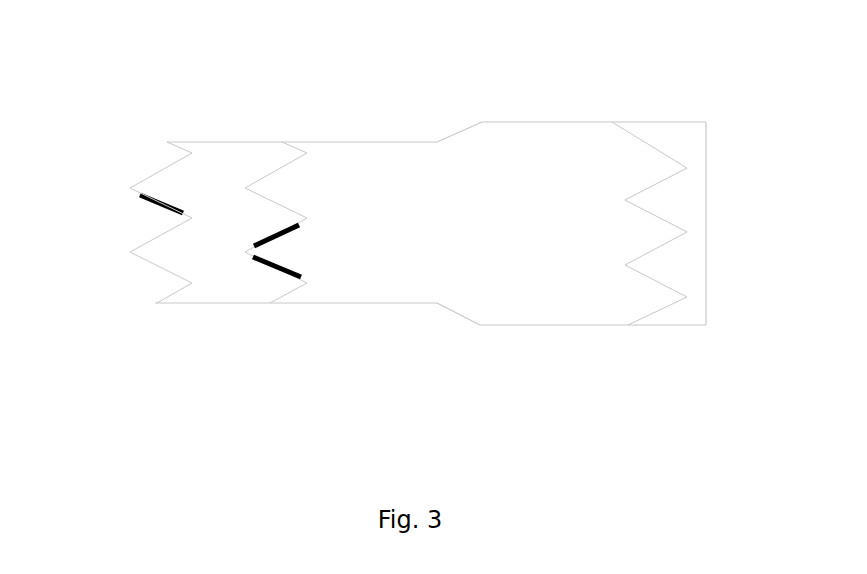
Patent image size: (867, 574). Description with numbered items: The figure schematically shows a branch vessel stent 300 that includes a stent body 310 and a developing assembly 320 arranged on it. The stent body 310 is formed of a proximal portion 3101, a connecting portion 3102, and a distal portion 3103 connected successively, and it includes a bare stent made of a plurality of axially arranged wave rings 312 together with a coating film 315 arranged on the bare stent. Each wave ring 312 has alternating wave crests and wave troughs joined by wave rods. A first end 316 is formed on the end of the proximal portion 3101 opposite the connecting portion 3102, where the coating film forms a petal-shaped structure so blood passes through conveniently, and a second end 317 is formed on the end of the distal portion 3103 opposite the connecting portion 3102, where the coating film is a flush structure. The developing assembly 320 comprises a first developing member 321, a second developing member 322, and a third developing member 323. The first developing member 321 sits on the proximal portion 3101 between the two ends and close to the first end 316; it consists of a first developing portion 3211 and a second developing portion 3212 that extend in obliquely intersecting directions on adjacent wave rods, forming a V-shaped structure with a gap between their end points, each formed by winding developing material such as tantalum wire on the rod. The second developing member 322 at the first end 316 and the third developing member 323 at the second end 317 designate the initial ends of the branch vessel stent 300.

The branch vessel stent 300 is at (172, 33).
The stent body 310 is at (380, 60).
The proximal portion 3101 is at (342, 150).
The connecting portion 3102 is at (457, 150).
The distal portion 3103 is at (612, 150).
The wave ring 312 is at (273, 175).
The coating film 315 is at (685, 312).
The first end 316 is at (125, 200).
The second end 317 is at (706, 257).
The developing assembly 320 is at (143, 405).
The first developing member 321 is at (293, 358).
The first developing portion 3211 is at (272, 242).
The second developing portion 3212 is at (283, 268).
The second developing member 322 is at (158, 202).
The third developing member 323 is at (640, 210).